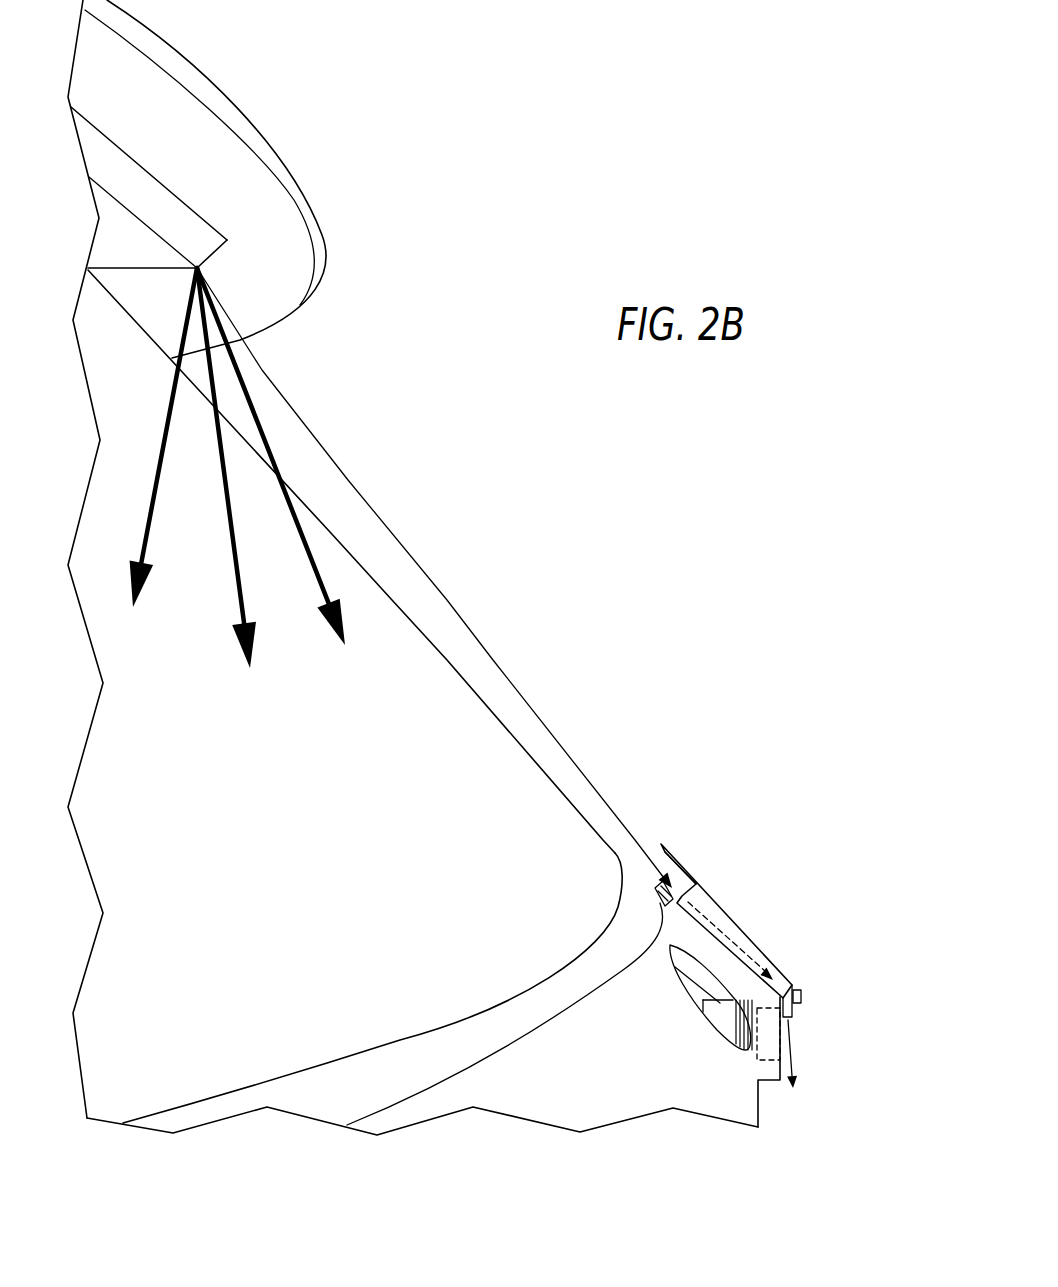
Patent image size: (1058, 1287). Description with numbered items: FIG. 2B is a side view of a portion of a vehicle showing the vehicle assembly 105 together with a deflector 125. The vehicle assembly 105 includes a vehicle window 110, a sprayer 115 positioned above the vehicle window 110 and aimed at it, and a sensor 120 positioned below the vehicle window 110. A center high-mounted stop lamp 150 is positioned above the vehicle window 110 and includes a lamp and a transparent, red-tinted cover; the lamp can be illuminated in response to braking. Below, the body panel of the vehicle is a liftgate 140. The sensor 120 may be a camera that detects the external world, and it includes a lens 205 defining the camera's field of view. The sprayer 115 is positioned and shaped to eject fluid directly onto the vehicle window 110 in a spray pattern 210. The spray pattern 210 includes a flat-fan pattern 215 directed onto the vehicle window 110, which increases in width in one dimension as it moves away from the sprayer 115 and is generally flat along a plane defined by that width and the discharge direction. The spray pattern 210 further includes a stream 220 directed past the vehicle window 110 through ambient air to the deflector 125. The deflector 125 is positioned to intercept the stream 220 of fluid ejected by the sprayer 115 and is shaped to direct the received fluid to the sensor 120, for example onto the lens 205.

The vehicle assembly 105 is at (435, 118).
The vehicle window 110 is at (477, 778).
The sprayer 115 is at (197, 268).
The sensor 120 is at (722, 1017).
The deflector 125 is at (736, 918).
The liftgate 140 is at (560, 1097).
The center high-mounted stop lamp 150 is at (113, 165).
The lens 205 is at (793, 1040).
The spray pattern 210 is at (526, 468).
The flat-fan pattern 215 is at (313, 546).
The stream 220 is at (414, 560).